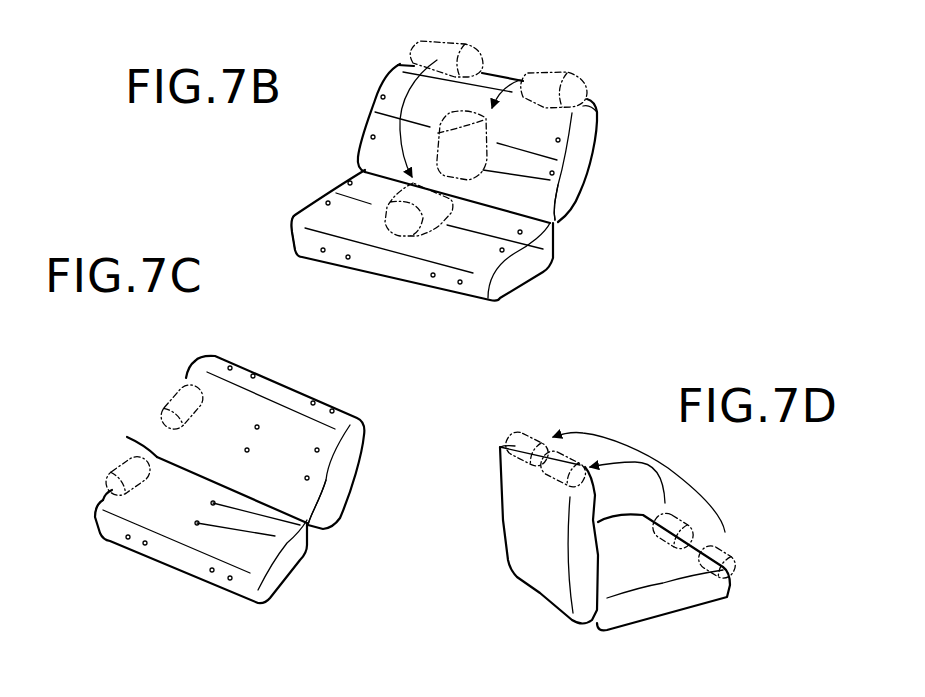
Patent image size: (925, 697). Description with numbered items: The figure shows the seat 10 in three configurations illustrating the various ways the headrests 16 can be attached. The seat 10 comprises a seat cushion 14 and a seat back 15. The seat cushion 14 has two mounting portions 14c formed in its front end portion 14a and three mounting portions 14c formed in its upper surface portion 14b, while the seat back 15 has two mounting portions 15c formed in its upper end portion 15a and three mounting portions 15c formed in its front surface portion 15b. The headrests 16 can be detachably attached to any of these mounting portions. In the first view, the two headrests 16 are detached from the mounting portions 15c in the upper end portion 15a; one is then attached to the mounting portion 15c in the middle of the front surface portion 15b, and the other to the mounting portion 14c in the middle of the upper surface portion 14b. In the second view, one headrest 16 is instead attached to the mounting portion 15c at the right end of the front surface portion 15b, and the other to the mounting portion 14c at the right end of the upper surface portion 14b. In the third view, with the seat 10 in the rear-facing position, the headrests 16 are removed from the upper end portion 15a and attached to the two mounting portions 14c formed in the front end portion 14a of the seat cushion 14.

In FIG. 7B, the seat 10 is at (715, 83).
In FIG. 7C, the seat 10 is at (293, 587).
In FIG. 7D, the seat 10 is at (742, 630).
In FIG. 7B, the seat cushion 14 is at (518, 274).
In FIG. 7C, the seat cushion 14 is at (110, 533).
In FIG. 7D, the seat cushion 14 is at (533, 573).
In FIG. 7D, the front end portion 14a is at (502, 447).
In FIG. 7B, the upper surface portion 14b is at (320, 223).
In FIG. 7C, the upper surface portion 14b is at (97, 503).
In FIG. 7B, the mounting portion 14c is at (348, 183).
In FIG. 7C, the mounting portion 14c is at (265, 556).
In FIG. 7B, the seat back 15 is at (578, 178).
In FIG. 7C, the seat back 15 is at (338, 480).
In FIG. 7D, the seat back 15 is at (643, 610).
In FIG. 7B, the upper end portion 15a is at (587, 100).
In FIG. 7B, the front surface portion 15b is at (550, 220).
In FIG. 7C, the front surface portion 15b is at (290, 498).
In FIG. 7B, the mounting portion 15c is at (373, 137).
In FIG. 7C, the mounting portion 15c is at (253, 376).
In FIG. 7B, the headrest 16 is at (527, 73).
In FIG. 7C, the headrest 16 is at (160, 457).
In FIG. 7D, the headrest 16 is at (556, 483).